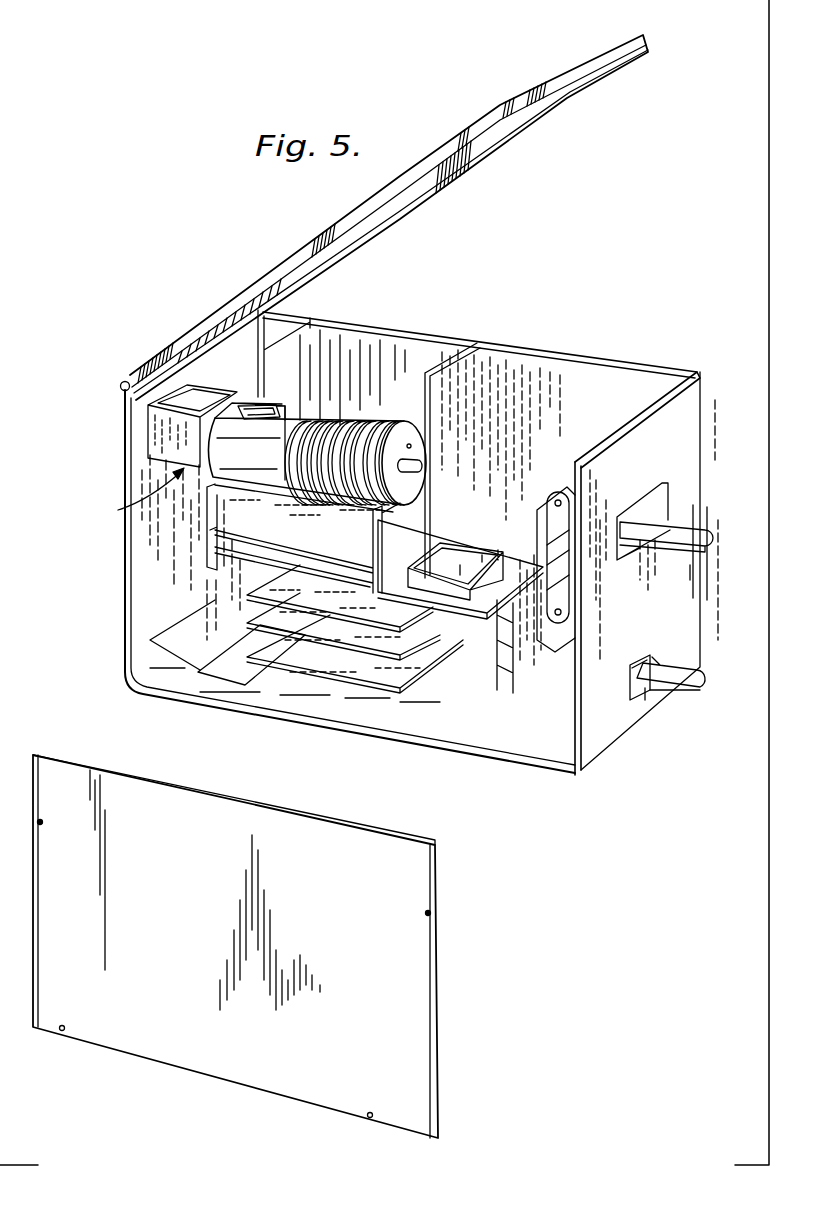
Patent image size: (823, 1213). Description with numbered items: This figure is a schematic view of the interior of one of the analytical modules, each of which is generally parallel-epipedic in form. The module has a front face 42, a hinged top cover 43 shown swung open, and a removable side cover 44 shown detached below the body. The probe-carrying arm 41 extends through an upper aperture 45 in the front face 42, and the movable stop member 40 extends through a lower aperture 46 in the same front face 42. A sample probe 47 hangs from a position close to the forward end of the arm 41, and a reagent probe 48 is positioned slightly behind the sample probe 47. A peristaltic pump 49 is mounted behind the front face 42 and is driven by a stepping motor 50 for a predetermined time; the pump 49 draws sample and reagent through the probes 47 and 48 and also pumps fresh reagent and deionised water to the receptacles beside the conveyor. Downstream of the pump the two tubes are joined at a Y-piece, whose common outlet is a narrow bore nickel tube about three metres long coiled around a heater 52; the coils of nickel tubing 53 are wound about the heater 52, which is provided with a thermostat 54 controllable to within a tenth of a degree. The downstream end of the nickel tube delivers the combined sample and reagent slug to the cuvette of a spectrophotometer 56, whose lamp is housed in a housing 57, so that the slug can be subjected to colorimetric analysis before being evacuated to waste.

The movable stop member 40 is at (693, 690).
The probe-carrying arm 41 is at (675, 525).
The front face 42 is at (685, 640).
The hinged top cover 43 is at (467, 148).
The removable side cover 44 is at (246, 815).
The upper aperture 45 is at (665, 485).
The lower aperture 46 is at (647, 700).
The sample probe 47 is at (703, 595).
The reagent probe 48 is at (690, 572).
The peristaltic pump 49 is at (556, 492).
The stepping motor 50 is at (580, 628).
The heater 52 is at (420, 452).
The coils of nickel tubing 53 is at (368, 417).
The thermostat 54 is at (412, 448).
The spectrophotometer 56 is at (133, 510).
The housing 57 is at (150, 438).